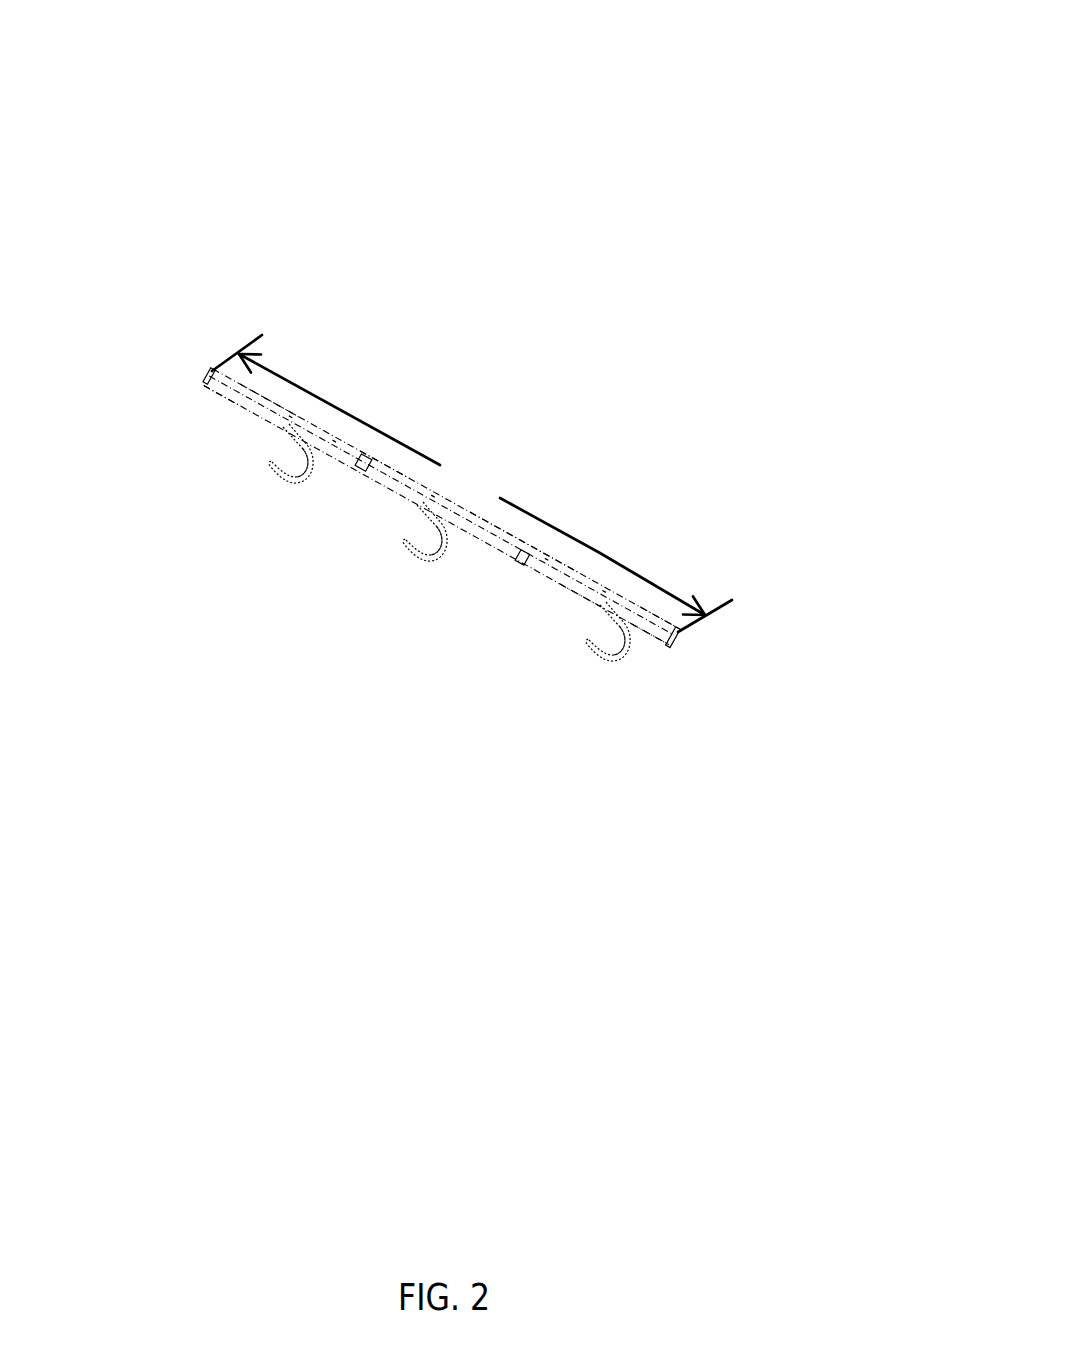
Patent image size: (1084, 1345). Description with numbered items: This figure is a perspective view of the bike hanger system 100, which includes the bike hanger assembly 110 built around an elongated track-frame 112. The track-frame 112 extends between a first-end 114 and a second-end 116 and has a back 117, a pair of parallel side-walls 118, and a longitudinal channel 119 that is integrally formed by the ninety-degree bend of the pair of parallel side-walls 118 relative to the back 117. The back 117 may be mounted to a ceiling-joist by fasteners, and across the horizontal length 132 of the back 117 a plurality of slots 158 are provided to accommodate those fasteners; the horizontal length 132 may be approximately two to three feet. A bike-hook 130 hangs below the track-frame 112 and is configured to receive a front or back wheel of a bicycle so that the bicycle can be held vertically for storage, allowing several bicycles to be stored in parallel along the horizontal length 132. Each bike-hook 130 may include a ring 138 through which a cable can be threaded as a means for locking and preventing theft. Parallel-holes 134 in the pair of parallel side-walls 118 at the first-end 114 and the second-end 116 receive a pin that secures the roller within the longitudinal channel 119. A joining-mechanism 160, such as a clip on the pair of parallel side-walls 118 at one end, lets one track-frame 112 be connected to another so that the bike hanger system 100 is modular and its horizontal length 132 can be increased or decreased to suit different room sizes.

The bike hanger system 100 is at (793, 38).
The bike hanger assembly 110 is at (797, 82).
The track-frame 112 is at (440, 585).
The first-end 114 is at (667, 630).
The second-end 116 is at (214, 370).
The back 117 is at (388, 465).
The pair of parallel side-walls 118 is at (585, 590).
The longitudinal channel 119 is at (683, 643).
The bike-hook 130 is at (272, 460).
The horizontal length 132 is at (472, 483).
The parallel-holes 134 is at (210, 378).
The ring 138 is at (310, 459).
The slots 158 is at (247, 390).
The joining-mechanism 160 is at (358, 462).